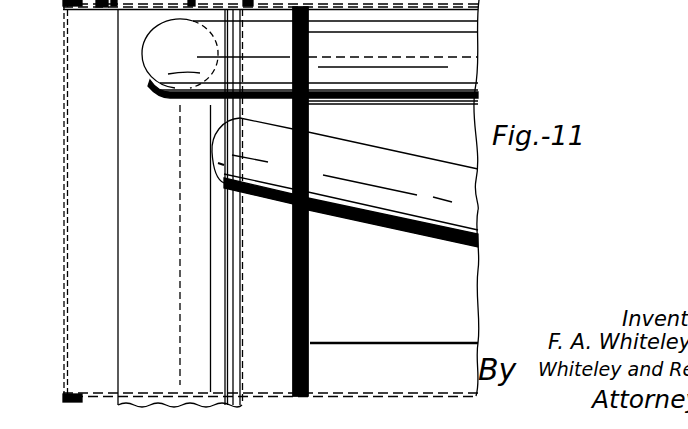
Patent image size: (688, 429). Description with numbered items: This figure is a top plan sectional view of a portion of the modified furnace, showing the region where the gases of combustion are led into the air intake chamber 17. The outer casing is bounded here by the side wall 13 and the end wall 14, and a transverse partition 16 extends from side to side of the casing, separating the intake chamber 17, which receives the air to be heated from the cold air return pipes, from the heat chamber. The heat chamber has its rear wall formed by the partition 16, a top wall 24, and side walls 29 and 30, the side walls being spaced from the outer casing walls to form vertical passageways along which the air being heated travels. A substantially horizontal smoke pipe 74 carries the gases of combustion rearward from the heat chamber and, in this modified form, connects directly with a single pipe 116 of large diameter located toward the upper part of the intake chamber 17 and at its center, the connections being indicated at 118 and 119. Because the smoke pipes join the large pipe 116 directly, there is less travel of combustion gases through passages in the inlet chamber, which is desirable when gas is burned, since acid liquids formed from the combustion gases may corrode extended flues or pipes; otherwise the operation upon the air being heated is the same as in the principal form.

The side wall 13 is at (395, 393).
The end wall 14 is at (63, 55).
The transverse partition 16 is at (293, 322).
The intake chamber 17 is at (273, 260).
The top wall of heat chamber 24 is at (445, 277).
The side wall of heat chamber 29 is at (428, 58).
The side wall of heat chamber 30 is at (382, 344).
The smoke pipe 74 is at (402, 162).
The single pipe of large diameter 116 is at (233, 288).
The connection of pipe 73 with pipe 116 118 is at (145, 75).
The connection of pipe 74 with pipe 116 119 is at (210, 160).